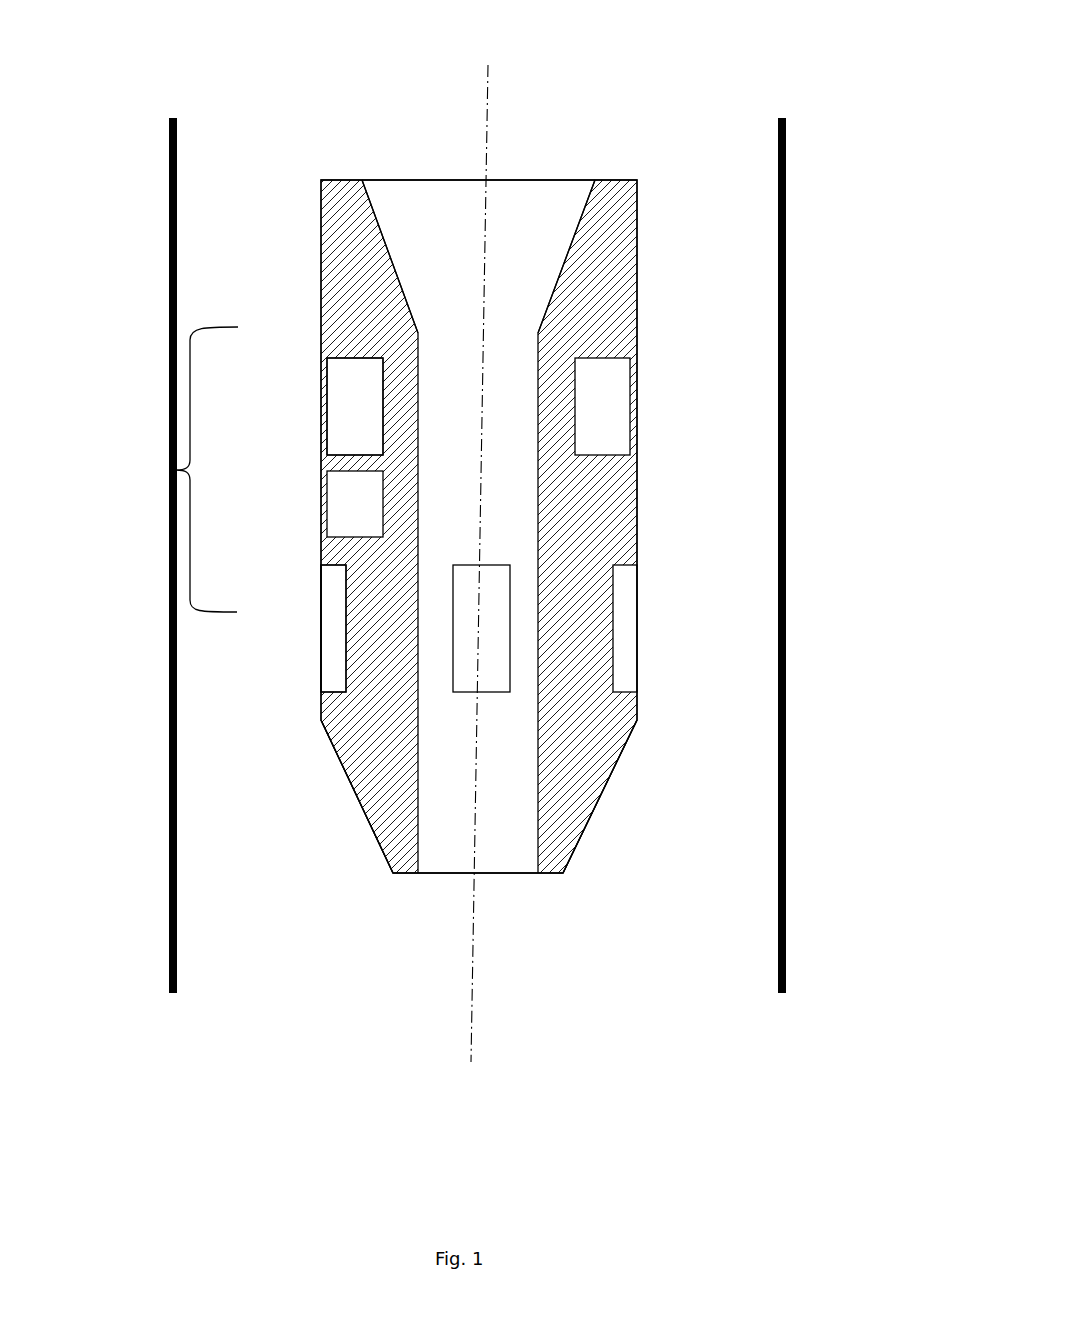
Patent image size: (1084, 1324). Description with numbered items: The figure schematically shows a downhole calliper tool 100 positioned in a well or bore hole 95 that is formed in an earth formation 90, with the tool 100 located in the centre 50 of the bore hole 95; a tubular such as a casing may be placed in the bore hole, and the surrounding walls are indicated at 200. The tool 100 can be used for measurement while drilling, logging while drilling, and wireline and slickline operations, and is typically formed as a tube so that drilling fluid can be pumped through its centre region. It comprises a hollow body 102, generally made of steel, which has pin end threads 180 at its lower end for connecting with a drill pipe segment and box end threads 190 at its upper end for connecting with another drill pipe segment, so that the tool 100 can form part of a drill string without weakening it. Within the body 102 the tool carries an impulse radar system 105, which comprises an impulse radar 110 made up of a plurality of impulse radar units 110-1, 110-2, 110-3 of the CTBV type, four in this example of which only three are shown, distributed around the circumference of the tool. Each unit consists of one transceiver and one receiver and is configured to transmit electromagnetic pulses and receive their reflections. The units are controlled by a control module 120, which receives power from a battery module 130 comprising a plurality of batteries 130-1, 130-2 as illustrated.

The downhole calliper tool 100 is at (637, 110).
The hollow body 102 is at (337, 311).
The impulse radar system 105 is at (176, 470).
The impulse radar 110 is at (335, 612).
The impulse radar unit 110-1 is at (340, 637).
The impulse radar unit 110-2 is at (502, 633).
The impulse radar unit 110-3 is at (622, 622).
The control module 120 is at (348, 497).
The battery module 130 is at (352, 407).
The battery 130-1 is at (374, 430).
The battery 130-2 is at (620, 418).
The pin end threads 180 is at (375, 843).
The box end threads 190 is at (576, 216).
The centre 50 is at (478, 773).
The side walls 200 is at (170, 920).
The earth formation 90 is at (875, 565).
The bore hole 95 is at (663, 940).